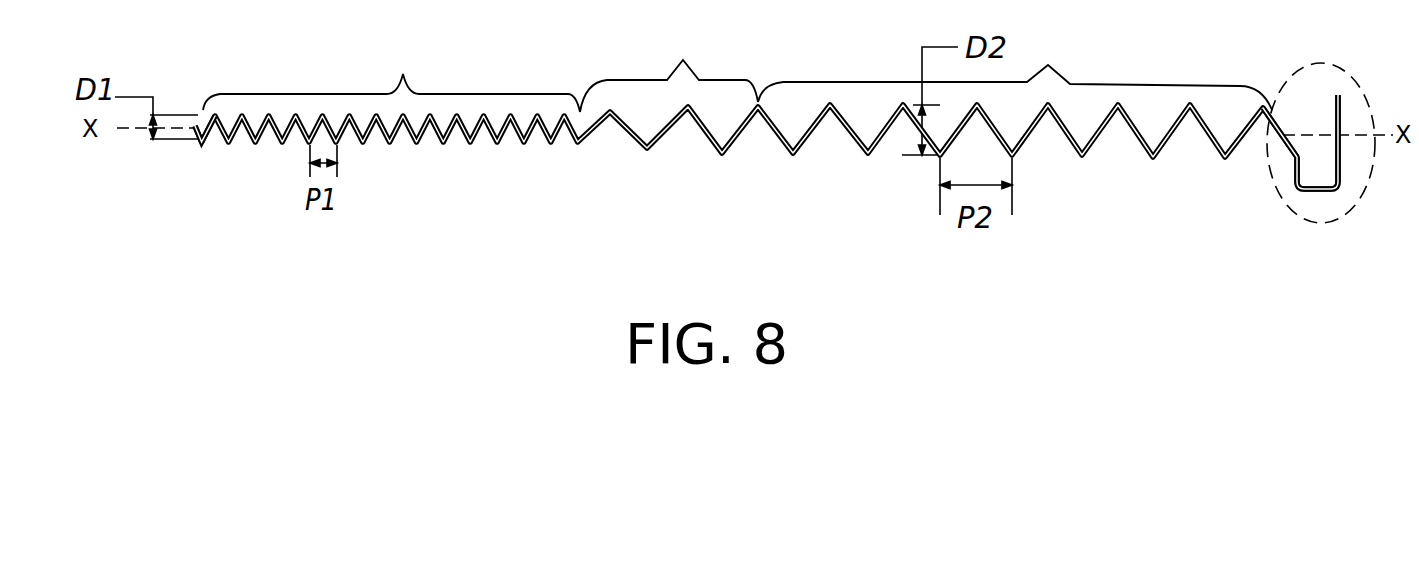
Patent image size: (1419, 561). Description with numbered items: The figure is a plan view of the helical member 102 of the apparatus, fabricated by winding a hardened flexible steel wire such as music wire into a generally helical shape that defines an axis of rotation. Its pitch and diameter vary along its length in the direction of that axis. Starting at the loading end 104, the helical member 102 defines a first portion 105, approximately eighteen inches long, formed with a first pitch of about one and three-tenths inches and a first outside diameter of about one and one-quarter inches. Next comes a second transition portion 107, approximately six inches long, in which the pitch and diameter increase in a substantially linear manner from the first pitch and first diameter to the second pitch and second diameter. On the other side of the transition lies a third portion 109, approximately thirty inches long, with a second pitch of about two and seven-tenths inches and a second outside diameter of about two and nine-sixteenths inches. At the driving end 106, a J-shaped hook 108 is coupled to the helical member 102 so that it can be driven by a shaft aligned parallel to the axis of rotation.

The helical member 102 is at (716, 166).
The loading end 104 is at (198, 125).
The first portion 105 is at (410, 66).
The driving end 106 is at (1274, 124).
The second transition portion 107 is at (689, 49).
The J-shaped hook 108 is at (1325, 192).
The third portion 109 is at (1055, 55).